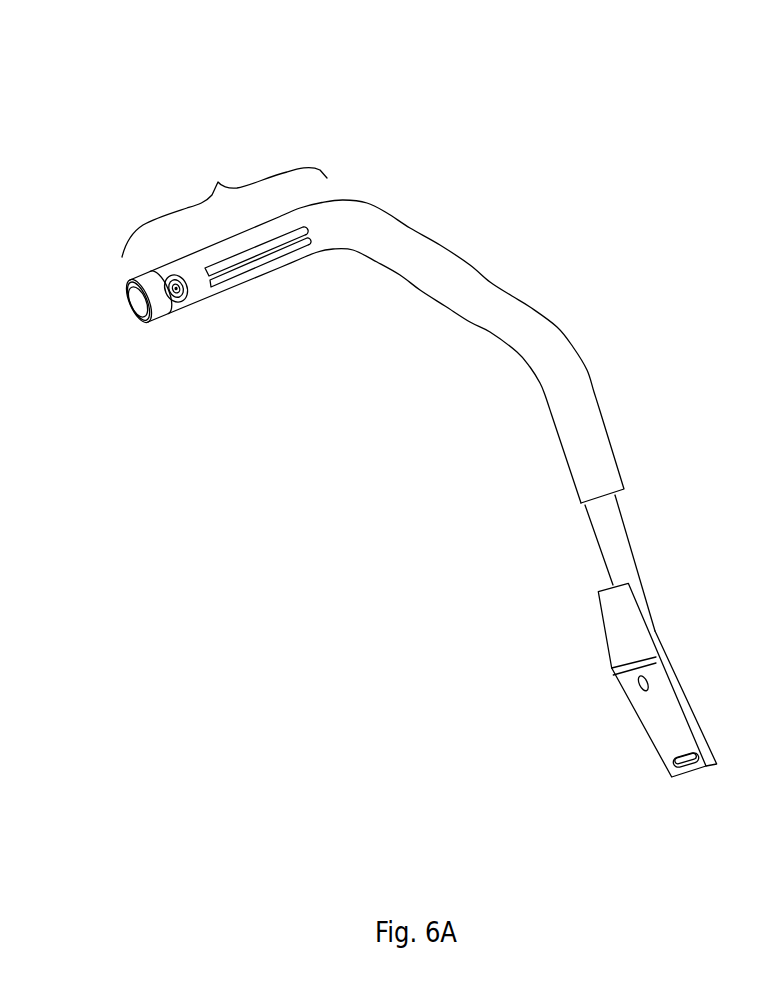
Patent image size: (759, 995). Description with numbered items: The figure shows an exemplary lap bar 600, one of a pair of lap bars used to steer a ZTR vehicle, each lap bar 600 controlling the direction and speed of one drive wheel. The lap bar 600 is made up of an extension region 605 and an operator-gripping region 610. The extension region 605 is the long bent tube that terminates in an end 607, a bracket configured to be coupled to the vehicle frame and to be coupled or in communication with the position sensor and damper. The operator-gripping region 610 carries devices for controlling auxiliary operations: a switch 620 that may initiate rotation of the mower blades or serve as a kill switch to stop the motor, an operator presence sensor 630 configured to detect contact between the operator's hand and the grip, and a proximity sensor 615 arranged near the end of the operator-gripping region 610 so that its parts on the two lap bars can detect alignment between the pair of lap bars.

The lap bar 600 is at (401, 150).
The extension region 605 is at (492, 293).
The end 607 is at (667, 680).
The operator-gripping region 610 is at (218, 182).
The proximity sensor 615 is at (137, 333).
The switch 620 is at (187, 303).
The operator presence sensor 630 is at (282, 258).